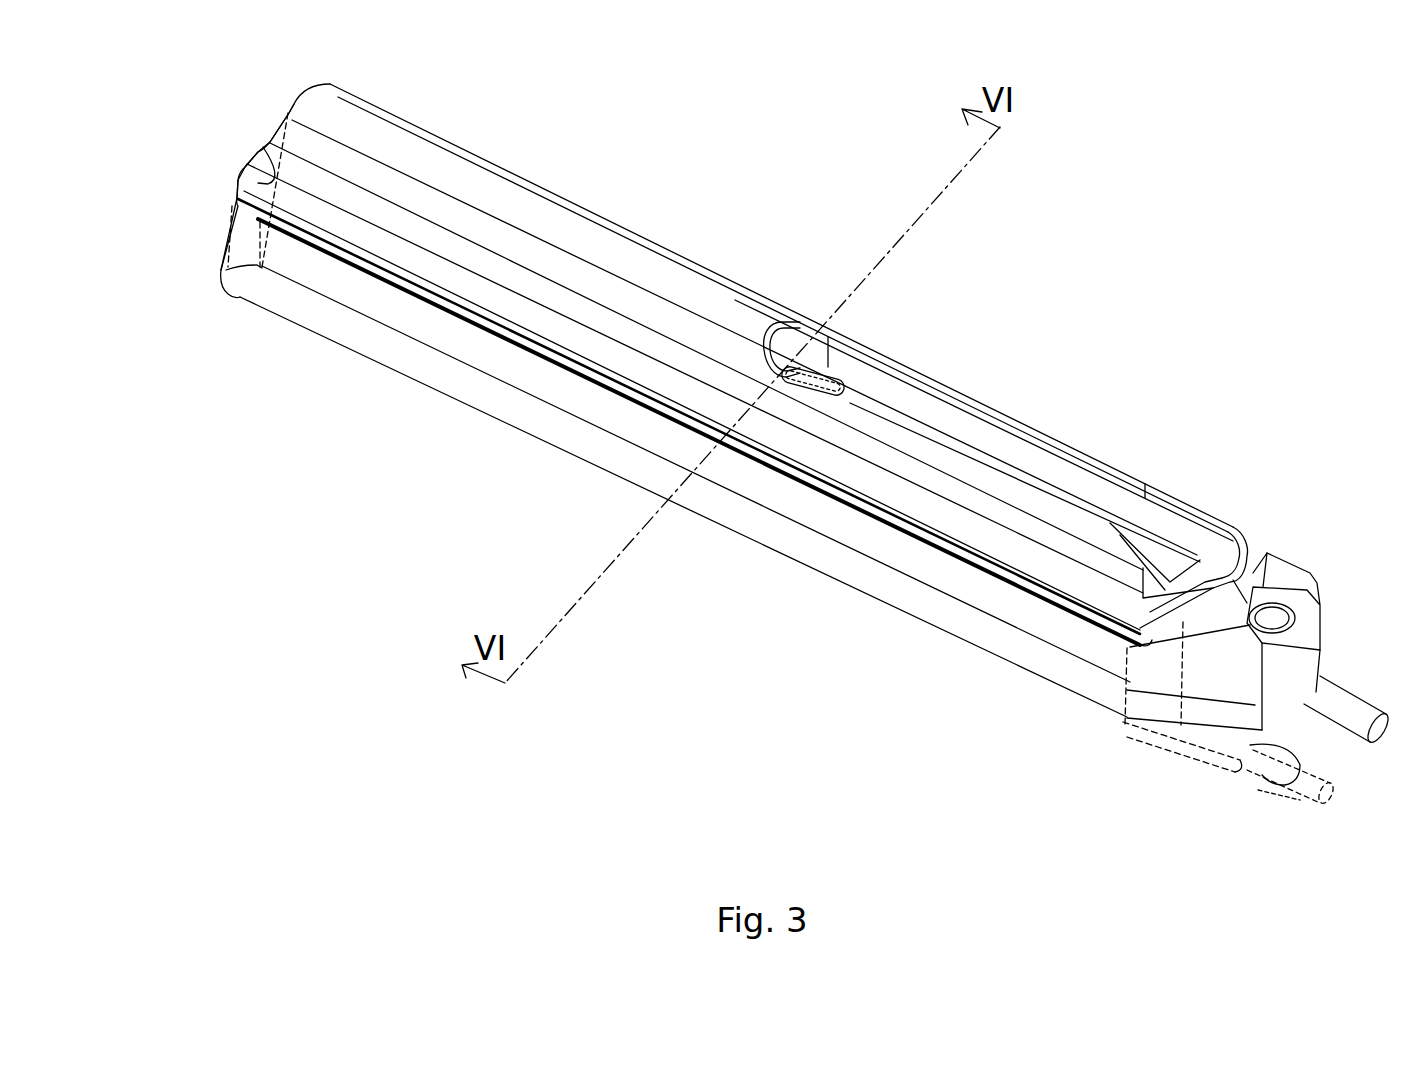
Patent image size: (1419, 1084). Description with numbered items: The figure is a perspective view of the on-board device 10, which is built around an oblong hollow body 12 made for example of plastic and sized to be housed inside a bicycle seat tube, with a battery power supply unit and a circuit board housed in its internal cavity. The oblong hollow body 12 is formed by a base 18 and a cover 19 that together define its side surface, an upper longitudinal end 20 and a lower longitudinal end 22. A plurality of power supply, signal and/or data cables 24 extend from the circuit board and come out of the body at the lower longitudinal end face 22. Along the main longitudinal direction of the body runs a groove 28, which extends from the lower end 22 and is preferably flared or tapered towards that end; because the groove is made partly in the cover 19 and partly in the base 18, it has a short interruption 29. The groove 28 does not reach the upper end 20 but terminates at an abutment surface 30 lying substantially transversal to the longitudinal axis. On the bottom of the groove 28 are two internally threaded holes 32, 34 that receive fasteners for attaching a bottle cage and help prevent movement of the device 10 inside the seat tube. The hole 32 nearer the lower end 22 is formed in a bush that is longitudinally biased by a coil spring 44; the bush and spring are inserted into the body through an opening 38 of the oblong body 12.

The on-board device 10 is at (755, 455).
The oblong hollow body 12 is at (755, 455).
The base 18 is at (720, 480).
The cover 19 is at (448, 183).
The upper longitudinal end 20 is at (218, 248).
The lower longitudinal end 22 is at (1340, 676).
The cables 24 is at (1293, 815).
The groove 28 is at (1046, 474).
The short interruption 29 is at (1246, 558).
The abutment surface 30 is at (776, 348).
The hole 32 is at (1285, 630).
The hole 34 is at (806, 366).
The opening 38 is at (1265, 722).
The coil spring 44 is at (1292, 782).